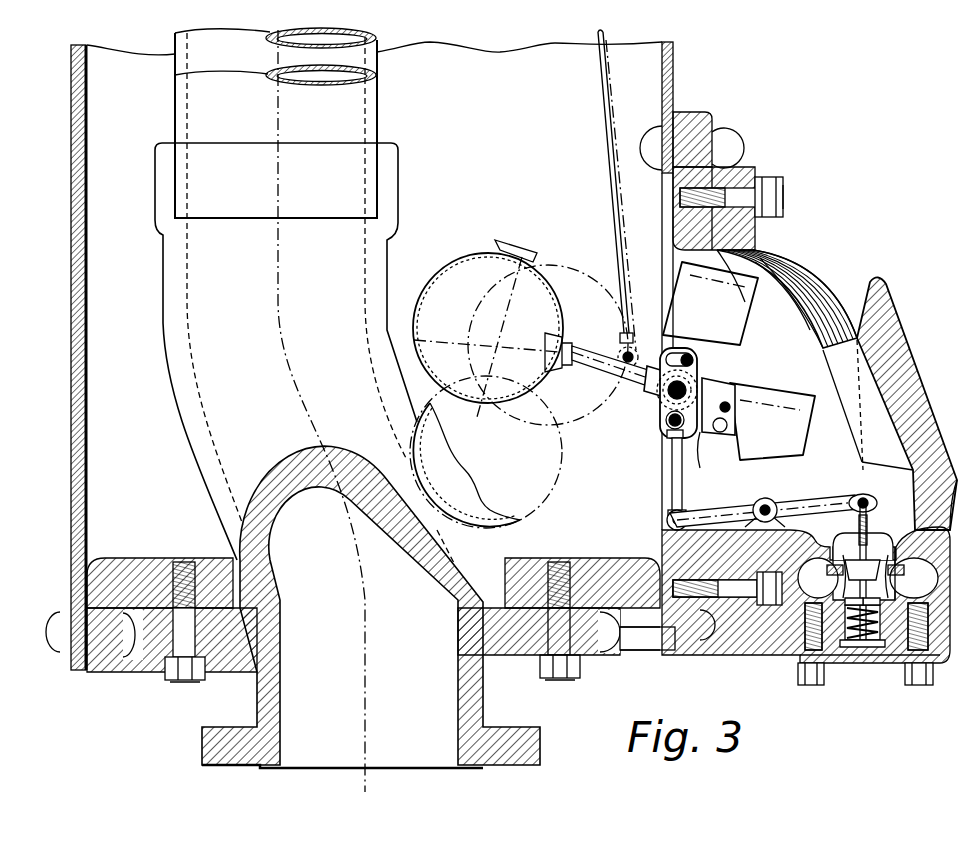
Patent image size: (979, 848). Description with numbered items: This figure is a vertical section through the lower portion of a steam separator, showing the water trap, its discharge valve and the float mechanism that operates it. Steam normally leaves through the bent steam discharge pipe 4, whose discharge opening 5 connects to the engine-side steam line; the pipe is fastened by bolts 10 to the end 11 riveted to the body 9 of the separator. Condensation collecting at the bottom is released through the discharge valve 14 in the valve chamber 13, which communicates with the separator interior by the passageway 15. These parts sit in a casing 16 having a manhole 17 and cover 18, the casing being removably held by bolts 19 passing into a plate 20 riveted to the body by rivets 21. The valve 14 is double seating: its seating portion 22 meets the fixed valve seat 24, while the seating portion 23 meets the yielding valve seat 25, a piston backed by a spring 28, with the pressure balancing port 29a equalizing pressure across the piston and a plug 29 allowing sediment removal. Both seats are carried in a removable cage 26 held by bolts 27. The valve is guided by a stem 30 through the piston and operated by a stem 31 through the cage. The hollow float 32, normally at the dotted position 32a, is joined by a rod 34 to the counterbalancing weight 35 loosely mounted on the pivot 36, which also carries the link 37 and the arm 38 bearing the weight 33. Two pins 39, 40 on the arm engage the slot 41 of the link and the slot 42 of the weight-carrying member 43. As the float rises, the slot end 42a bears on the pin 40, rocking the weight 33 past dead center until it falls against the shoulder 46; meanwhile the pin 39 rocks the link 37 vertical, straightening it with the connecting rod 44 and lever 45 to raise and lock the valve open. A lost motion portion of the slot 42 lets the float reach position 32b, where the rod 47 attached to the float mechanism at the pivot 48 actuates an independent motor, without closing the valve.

The steam discharge pipe 4 is at (305, 410).
The discharge opening 5 is at (371, 607).
The body 9 is at (75, 432).
The bolts 10 is at (180, 636).
The end 11 is at (115, 588).
The valve chamber 13 is at (930, 580).
The discharge valve 14 is at (905, 530).
The passageway 15 is at (946, 465).
The casing 16 is at (805, 595).
The manhole 17 is at (888, 440).
The cover 18 is at (917, 398).
The bolts 19 is at (730, 193).
The plate 20 is at (705, 128).
The rivets 21 is at (725, 150).
The seating portion 22 is at (898, 568).
The seating portion 23 is at (920, 592).
The fixed valve seat 24 is at (823, 583).
The yielding valve seat 25 is at (915, 598).
The removable cage 26 is at (860, 648).
The bolts 27 is at (808, 678).
The spring 28 is at (883, 648).
The plug 29 is at (880, 652).
The pressure balancing port 29a is at (870, 650).
The stem 30 is at (800, 640).
The stem 31 is at (873, 505).
The float 32 is at (452, 280).
The float normal position 32a is at (551, 493).
The float raised position 32b is at (560, 280).
The weight 33 is at (745, 302).
The rod 34 is at (668, 392).
The counterbalancing weight 35 is at (802, 400).
The pivot 36 is at (672, 428).
The link 37 is at (672, 410).
The arm 38 is at (825, 283).
The pin 39 is at (790, 270).
The pin 40 is at (870, 285).
The slot 41 is at (728, 285).
The slot 42 is at (727, 436).
The slot end 42a is at (770, 382).
The weight-carrying member 43 is at (703, 437).
The connecting rod 44 is at (672, 470).
The lever 45 is at (705, 513).
The shoulder 46 is at (838, 263).
The rod 47 is at (603, 108).
The pivot 48 is at (622, 354).